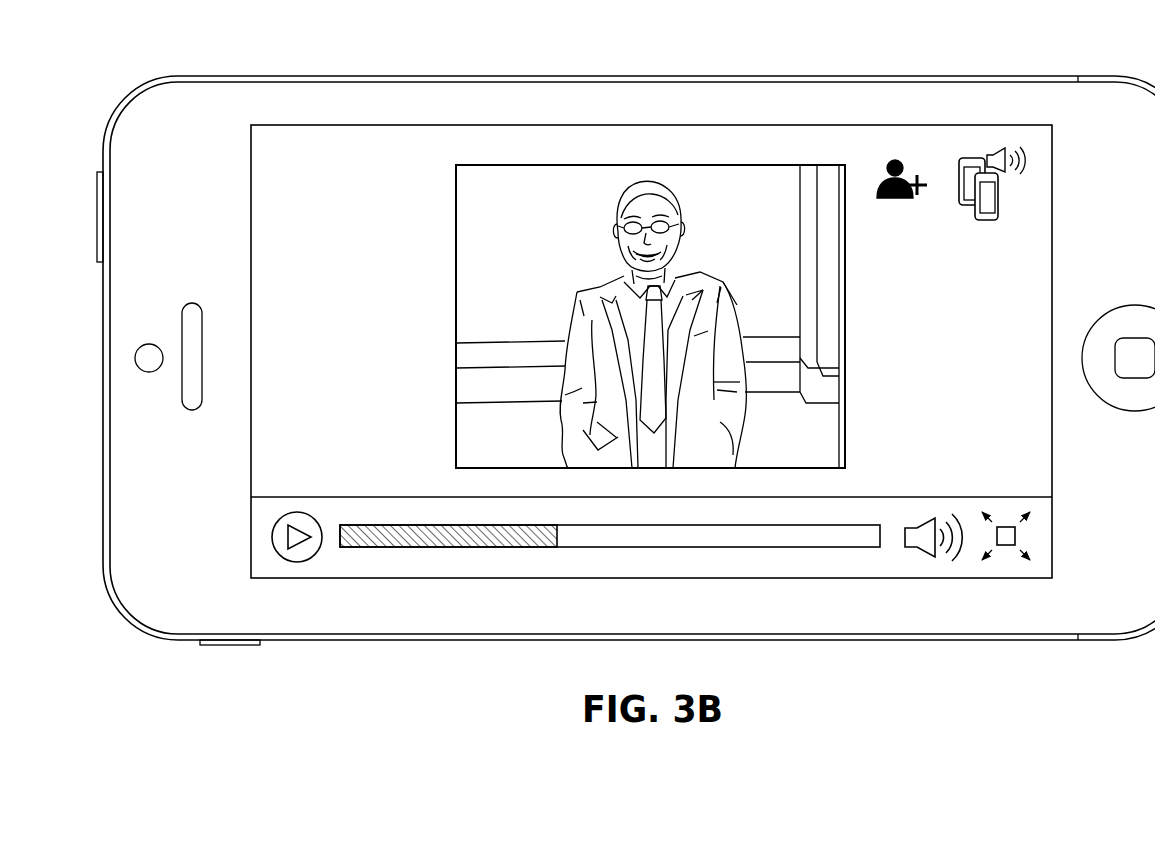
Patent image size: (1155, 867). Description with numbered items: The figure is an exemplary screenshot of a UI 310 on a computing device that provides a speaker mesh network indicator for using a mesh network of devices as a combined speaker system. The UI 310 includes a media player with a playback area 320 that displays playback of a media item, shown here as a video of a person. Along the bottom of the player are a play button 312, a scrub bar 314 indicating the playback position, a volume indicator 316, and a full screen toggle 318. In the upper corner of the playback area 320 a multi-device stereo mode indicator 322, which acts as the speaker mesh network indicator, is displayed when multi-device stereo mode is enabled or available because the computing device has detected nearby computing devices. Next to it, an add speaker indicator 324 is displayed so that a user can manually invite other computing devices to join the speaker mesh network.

The UI 310 is at (167, 46).
The playback area 320 is at (405, 138).
The play button 312 is at (290, 510).
The scrub bar 314 is at (375, 524).
The volume indicator 316 is at (922, 518).
The full screen toggle 318 is at (1003, 512).
The multi-device stereo mode indicator 322 is at (990, 138).
The add speaker indicator 324 is at (900, 153).